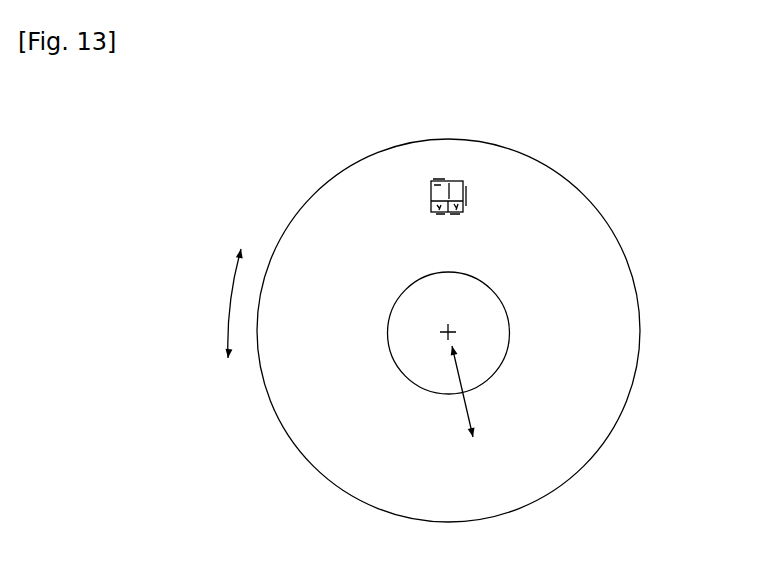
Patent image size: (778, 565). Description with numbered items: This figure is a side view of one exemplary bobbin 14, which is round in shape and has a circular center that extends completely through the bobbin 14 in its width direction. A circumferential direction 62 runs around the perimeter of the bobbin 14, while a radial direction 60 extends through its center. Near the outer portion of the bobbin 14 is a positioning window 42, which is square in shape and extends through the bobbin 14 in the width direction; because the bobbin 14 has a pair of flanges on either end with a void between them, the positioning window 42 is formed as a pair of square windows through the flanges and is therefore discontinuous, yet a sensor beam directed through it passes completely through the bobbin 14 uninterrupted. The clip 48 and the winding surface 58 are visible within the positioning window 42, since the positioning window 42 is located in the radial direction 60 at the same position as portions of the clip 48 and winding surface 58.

The bobbin 14 is at (310, 130).
The positioning window 42 is at (450, 188).
The clip 48 is at (465, 206).
The winding surface 58 is at (436, 188).
The radial direction 60 is at (470, 406).
The circumferential direction 62 is at (228, 303).